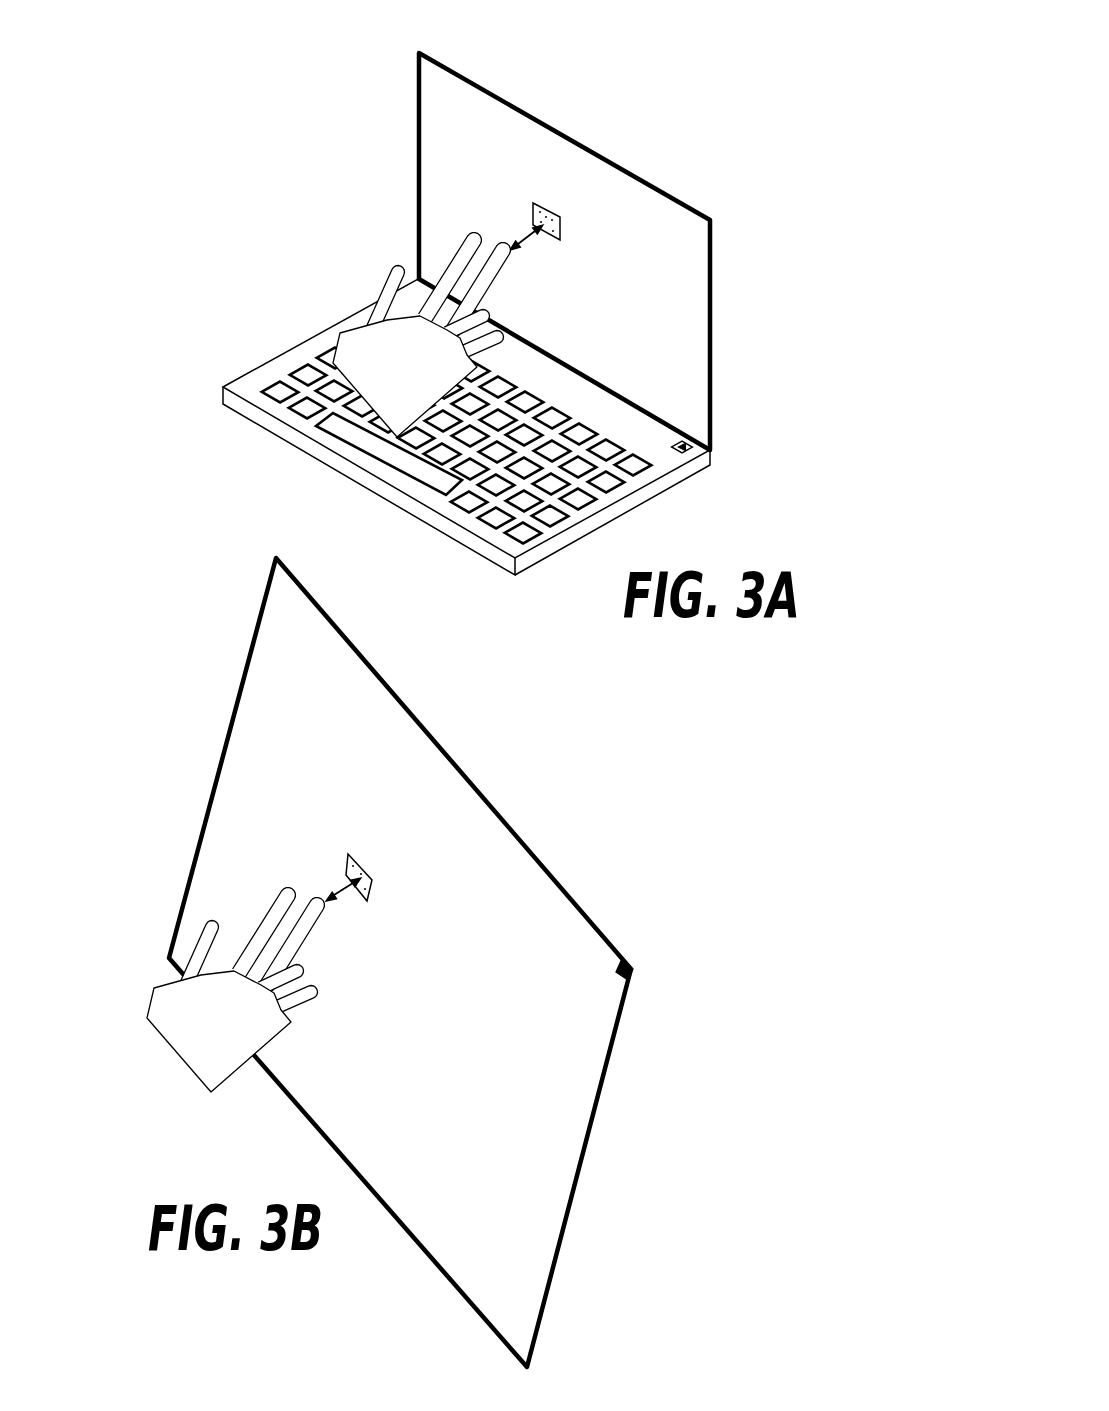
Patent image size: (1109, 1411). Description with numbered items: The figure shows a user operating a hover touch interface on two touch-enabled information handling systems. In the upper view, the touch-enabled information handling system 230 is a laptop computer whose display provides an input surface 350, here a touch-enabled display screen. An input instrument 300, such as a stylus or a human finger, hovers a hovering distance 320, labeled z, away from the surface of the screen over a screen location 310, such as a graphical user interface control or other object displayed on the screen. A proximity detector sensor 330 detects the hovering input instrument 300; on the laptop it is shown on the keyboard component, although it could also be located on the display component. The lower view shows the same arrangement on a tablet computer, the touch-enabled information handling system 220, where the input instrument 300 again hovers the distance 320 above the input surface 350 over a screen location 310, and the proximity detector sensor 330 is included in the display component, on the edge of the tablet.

In FIG. 3A, the touch-enabled information handling system 230 is at (408, 314).
In FIG. 3B, the touch-enabled information handling system 220 is at (347, 960).
In FIG. 3A, the input surface 350 is at (430, 238).
In FIG. 3B, the input surface 350 is at (262, 706).
In FIG. 3A, the hovering distance 320 is at (493, 220).
In FIG. 3B, the hovering distance 320 is at (306, 872).
In FIG. 3A, the screen location 310 is at (594, 242).
In FIG. 3B, the screen location 310 is at (407, 899).
In FIG. 3A, the input instrument 300 is at (428, 364).
In FIG. 3B, the input instrument 300 is at (233, 1021).
In FIG. 3A, the proximity detector sensor 330 is at (688, 452).
In FIG. 3B, the proximity detector sensor 330 is at (637, 977).